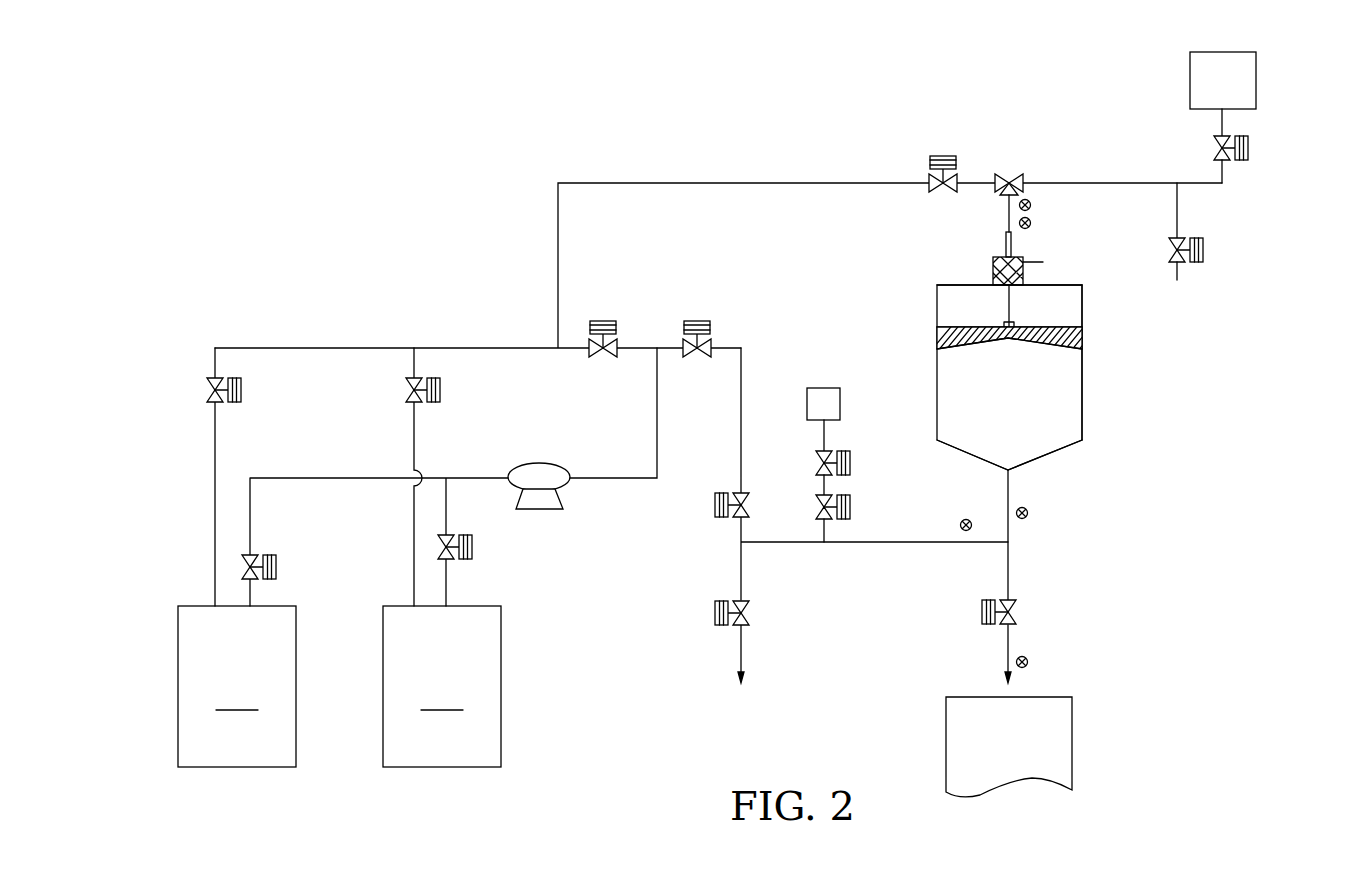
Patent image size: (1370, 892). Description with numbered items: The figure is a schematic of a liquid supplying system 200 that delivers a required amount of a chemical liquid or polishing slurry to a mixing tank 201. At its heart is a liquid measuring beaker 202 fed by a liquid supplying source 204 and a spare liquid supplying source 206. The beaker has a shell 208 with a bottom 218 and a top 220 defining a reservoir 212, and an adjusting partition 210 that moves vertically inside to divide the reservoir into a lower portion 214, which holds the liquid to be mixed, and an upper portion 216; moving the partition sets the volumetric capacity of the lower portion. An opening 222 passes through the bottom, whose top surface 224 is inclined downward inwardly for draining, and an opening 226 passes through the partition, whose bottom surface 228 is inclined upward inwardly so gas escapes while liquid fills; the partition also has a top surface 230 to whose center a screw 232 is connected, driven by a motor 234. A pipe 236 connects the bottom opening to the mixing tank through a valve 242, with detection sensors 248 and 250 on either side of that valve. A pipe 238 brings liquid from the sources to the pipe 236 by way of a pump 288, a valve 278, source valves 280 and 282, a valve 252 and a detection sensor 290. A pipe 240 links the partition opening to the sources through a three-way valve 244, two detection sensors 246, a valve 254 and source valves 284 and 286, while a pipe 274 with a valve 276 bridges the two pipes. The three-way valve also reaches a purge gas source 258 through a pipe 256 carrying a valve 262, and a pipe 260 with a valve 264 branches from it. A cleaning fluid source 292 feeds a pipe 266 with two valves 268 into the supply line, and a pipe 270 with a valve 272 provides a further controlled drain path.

The liquid supplying system 200 is at (269, 186).
The mixing tank 201 is at (1065, 742).
The liquid measuring beaker 202 is at (1102, 365).
The liquid supplying source 204 is at (442, 686).
The liquid supplying source 206 is at (237, 686).
The shell 208 is at (1082, 392).
The adjusting partition 210 is at (1082, 340).
The reservoir 212 is at (823, 312).
The portion 214 is at (950, 378).
The portion 216 is at (938, 317).
The bottom 218 is at (1070, 443).
The top 220 is at (1070, 285).
The opening 222 is at (1020, 474).
The top surface 224 is at (1042, 457).
The opening 226 is at (1017, 343).
The bottom surface 228 is at (988, 343).
The top surface 230 is at (972, 328).
The screw 232 is at (993, 262).
The motor 234 is at (1005, 248).
The pipe 236 is at (1010, 572).
The pipe 238 is at (741, 430).
The pipe 240 is at (688, 183).
The valve 242 is at (1018, 613).
The valve 244 is at (1007, 172).
The detection sensors 246 is at (1031, 205).
The detection sensor 248 is at (1028, 513).
The detection sensor 250 is at (1028, 662).
The valve 252 is at (733, 512).
The valve 254 is at (943, 156).
The pipe 256 is at (1130, 183).
The purge gas source 258 is at (1256, 80).
The pipe 260 is at (1178, 212).
The valve 262 is at (1249, 148).
The valve 264 is at (1204, 250).
The pipe 266 is at (824, 440).
The valves 268 is at (850, 463).
The pipe 270 is at (741, 562).
The valve 272 is at (714, 610).
The pipe 274 is at (640, 348).
The valve 276 is at (603, 320).
The valve 278 is at (697, 320).
The valve 280 is at (473, 547).
The valve 282 is at (278, 567).
The valve 284 is at (407, 390).
The valve 286 is at (208, 391).
The pump 288 is at (548, 464).
The detection sensor 290 is at (966, 532).
The cleaning fluid source 292 is at (807, 405).